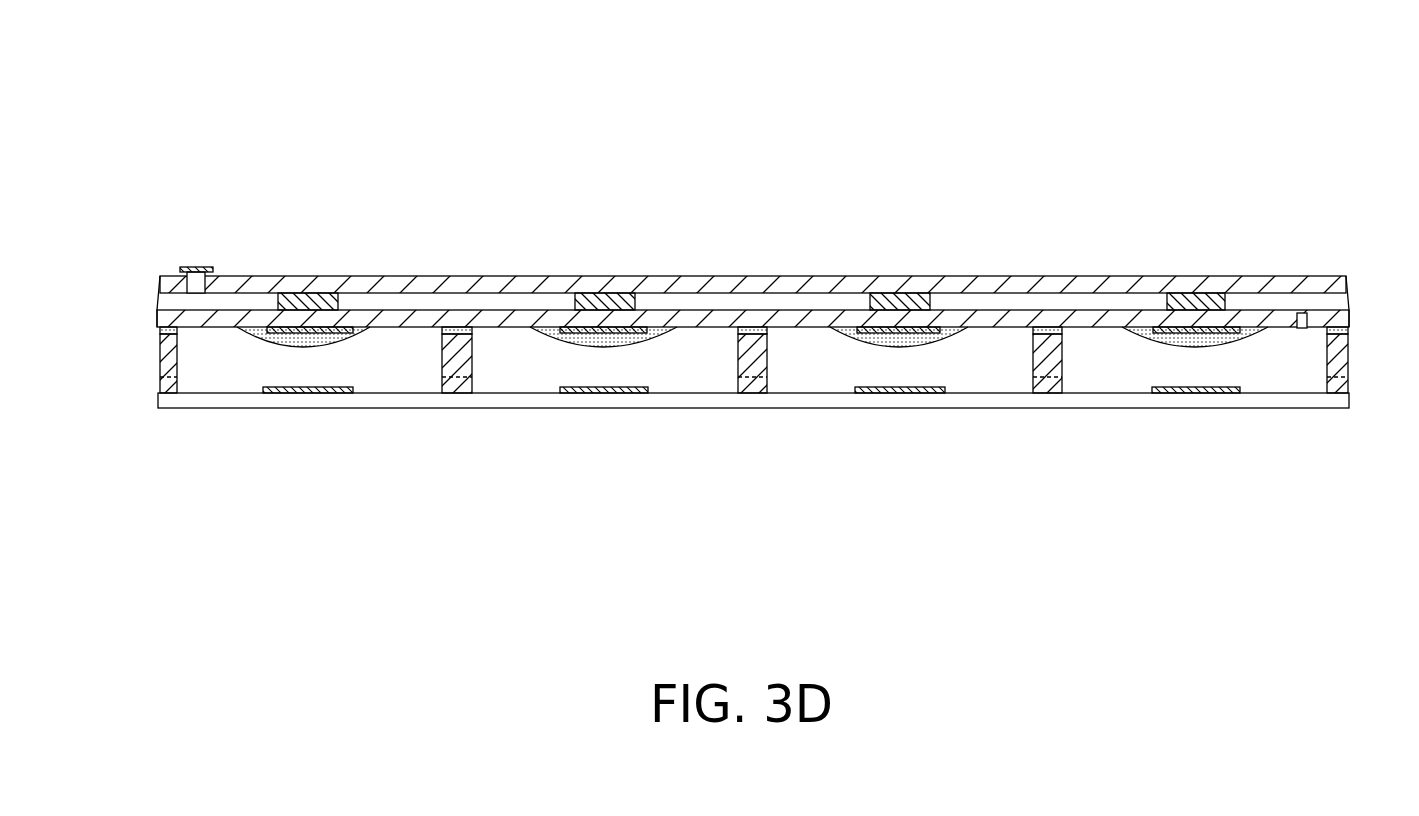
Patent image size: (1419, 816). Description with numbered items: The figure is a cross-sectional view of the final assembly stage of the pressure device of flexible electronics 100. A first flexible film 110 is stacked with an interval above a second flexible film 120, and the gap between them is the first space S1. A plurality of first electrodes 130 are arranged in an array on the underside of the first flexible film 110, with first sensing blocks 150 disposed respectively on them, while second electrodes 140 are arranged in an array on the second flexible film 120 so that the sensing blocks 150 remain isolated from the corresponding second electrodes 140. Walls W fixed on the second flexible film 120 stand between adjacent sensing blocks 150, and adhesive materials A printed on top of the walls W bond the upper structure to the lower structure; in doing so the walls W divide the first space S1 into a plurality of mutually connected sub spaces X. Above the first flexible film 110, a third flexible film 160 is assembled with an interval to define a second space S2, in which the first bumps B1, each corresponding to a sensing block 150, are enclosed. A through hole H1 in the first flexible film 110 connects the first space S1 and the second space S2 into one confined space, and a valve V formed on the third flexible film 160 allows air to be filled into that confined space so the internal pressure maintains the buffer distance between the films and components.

The pressure device of flexible electronics 100 is at (1229, 141).
The first flexible film 110 is at (175, 320).
The second flexible film 120 is at (188, 398).
The first electrodes 130 is at (273, 329).
The second electrodes 140 is at (273, 393).
The first sensing blocks 150 is at (337, 348).
The third flexible film 160 is at (797, 288).
The adhesive materials A is at (755, 327).
The first bumps B1 is at (307, 303).
The through hole H1 is at (1307, 312).
The first space S1 is at (867, 510).
The second space S2 is at (1130, 294).
The valve V is at (193, 267).
The walls W is at (162, 365).
The sub spaces X is at (402, 387).